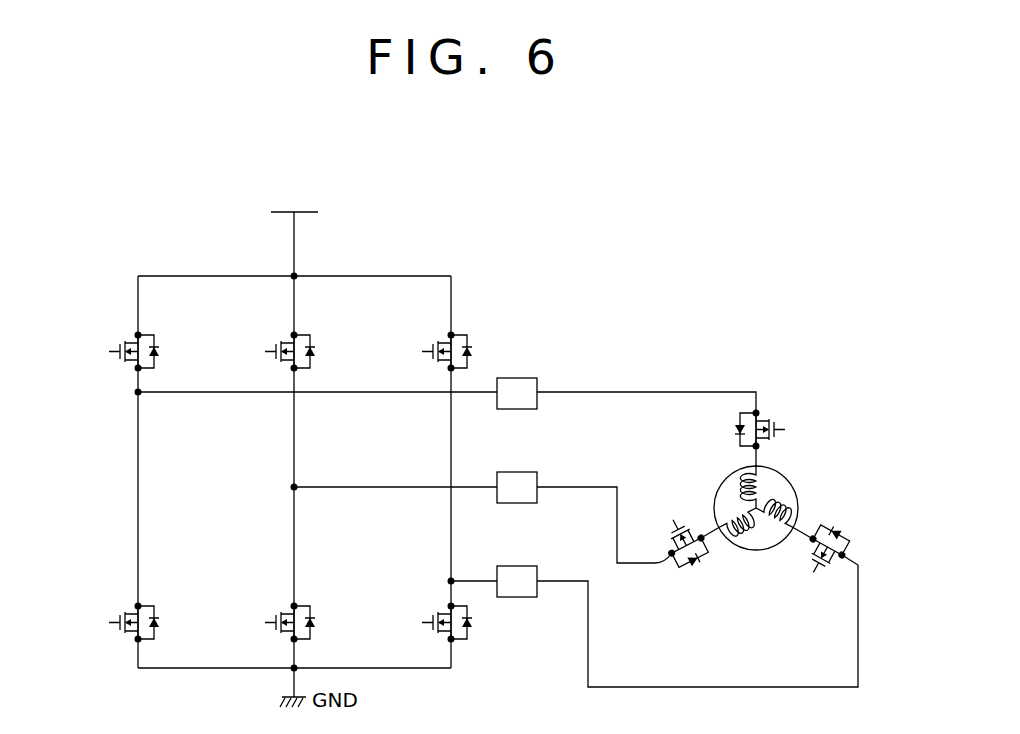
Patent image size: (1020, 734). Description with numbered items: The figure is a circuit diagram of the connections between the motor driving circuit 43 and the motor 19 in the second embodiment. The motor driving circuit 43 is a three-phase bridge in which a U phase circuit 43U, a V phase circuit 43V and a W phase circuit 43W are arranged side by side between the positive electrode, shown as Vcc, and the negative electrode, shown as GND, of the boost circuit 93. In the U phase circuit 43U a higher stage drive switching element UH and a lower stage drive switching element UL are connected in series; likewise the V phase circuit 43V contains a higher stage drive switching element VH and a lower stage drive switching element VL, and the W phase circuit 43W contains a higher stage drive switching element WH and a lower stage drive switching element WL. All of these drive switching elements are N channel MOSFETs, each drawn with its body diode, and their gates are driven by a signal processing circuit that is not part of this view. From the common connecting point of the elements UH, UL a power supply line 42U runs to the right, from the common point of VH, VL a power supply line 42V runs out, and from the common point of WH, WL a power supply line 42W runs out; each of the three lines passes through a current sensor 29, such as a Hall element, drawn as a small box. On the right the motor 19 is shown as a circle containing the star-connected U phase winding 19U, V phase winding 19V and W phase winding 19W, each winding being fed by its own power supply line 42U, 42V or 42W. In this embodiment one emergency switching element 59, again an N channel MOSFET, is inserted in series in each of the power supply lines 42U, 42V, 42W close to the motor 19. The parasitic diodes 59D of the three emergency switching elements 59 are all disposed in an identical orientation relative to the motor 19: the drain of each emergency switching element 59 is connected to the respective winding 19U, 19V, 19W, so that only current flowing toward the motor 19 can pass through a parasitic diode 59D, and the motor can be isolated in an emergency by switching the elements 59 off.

The boost circuit 93 is at (320, 201).
The motor driving circuit 43 is at (424, 254).
The U phase circuit 43U is at (137, 492).
The V phase circuit 43V is at (294, 440).
The W phase circuit 43W is at (451, 436).
The higher stage drive switching element UH is at (119, 324).
The higher stage drive switching element VH is at (275, 334).
The higher stage drive switching element WH is at (437, 332).
The lower stage drive switching element UL is at (119, 608).
The lower stage drive switching element VL is at (278, 607).
The lower stage drive switching element WL is at (436, 607).
The current sensor 29 is at (517, 608).
The power supply line 42U is at (722, 390).
The power supply line 42V is at (620, 508).
The power supply line 42W is at (590, 660).
The emergency switching element 59 is at (773, 412).
The parasitic diode 59D is at (736, 430).
The motor 19 is at (797, 509).
The U phase winding 19U is at (768, 483).
The V phase winding 19V is at (738, 530).
The W phase winding 19W is at (780, 520).